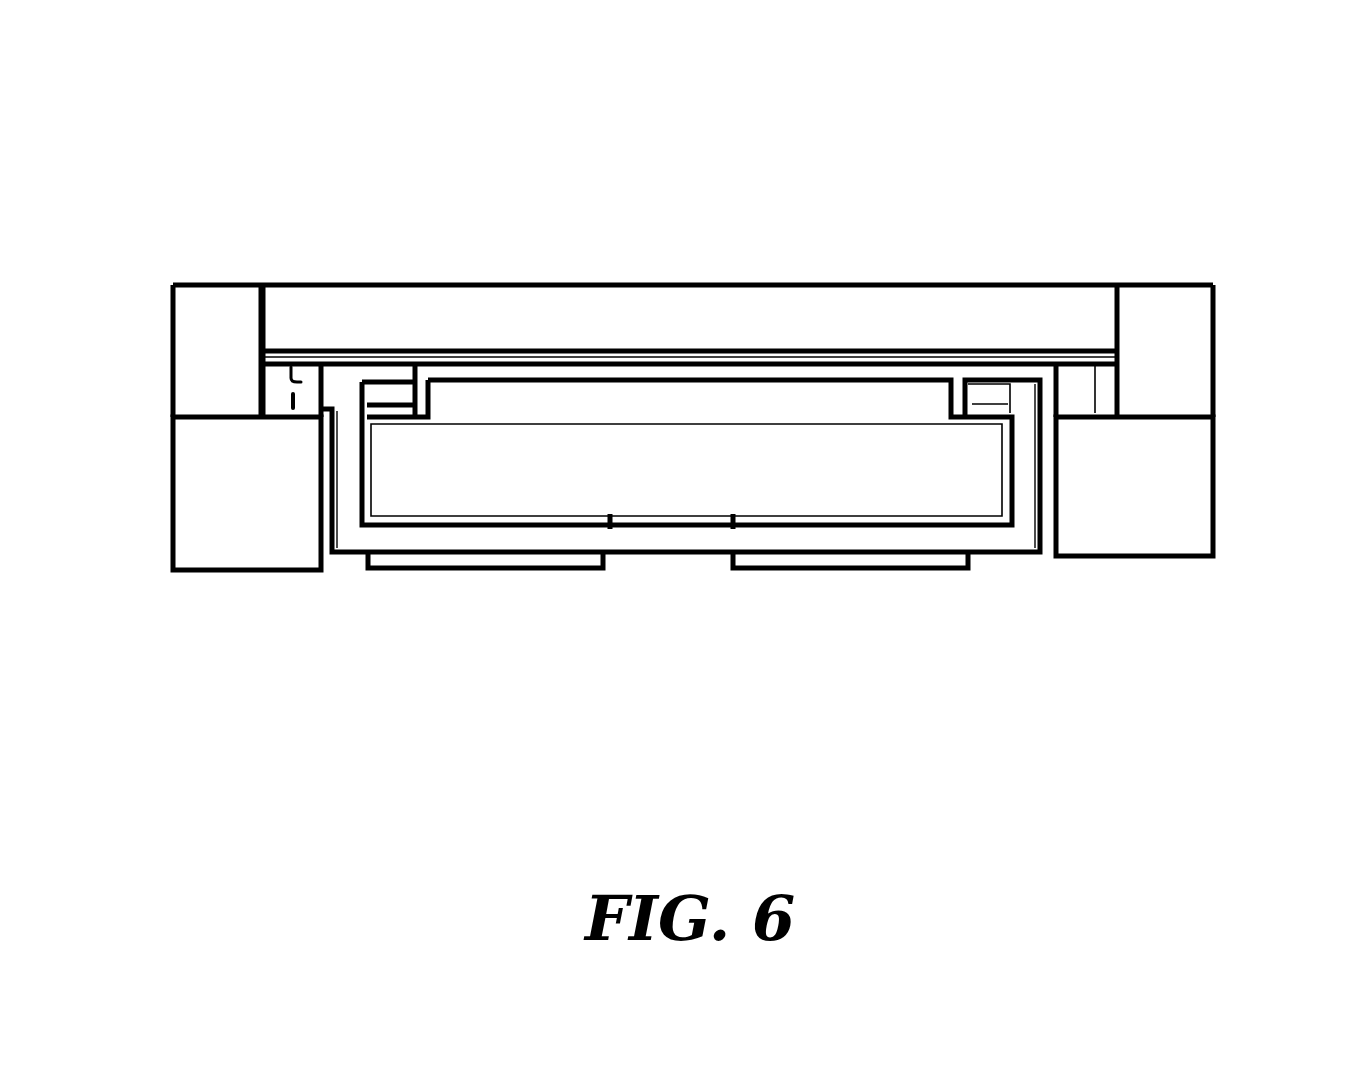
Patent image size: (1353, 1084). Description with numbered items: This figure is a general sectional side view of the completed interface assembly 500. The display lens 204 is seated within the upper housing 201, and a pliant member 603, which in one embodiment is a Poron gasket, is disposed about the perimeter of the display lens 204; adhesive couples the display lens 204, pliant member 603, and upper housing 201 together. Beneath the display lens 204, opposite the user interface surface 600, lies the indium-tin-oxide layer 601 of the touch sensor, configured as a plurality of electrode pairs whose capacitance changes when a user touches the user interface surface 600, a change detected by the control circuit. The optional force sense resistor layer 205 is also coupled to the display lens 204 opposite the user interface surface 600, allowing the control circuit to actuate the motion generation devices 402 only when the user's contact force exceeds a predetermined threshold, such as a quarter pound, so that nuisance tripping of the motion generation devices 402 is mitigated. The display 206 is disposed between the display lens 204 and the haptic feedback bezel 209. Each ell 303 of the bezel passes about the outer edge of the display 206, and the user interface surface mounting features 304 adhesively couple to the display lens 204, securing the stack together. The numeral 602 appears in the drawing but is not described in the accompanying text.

The user interface surface 600 is at (733, 264).
The interface assembly 500 is at (1240, 382).
The upper housing 201 is at (222, 340).
The display lens 204 is at (320, 325).
The force sense resistor layer 205 is at (392, 366).
The indium-tin-oxide layer 601 is at (803, 355).
The vertical interconnects 602 is at (990, 387).
The pliant member 603 is at (1103, 387).
The ell 303 is at (347, 467).
The user interface surface mounting feature 304 is at (307, 403).
The haptic feedback bezel 209 is at (348, 537).
The display 206 is at (791, 478).
The motion generation device 402 is at (757, 570).